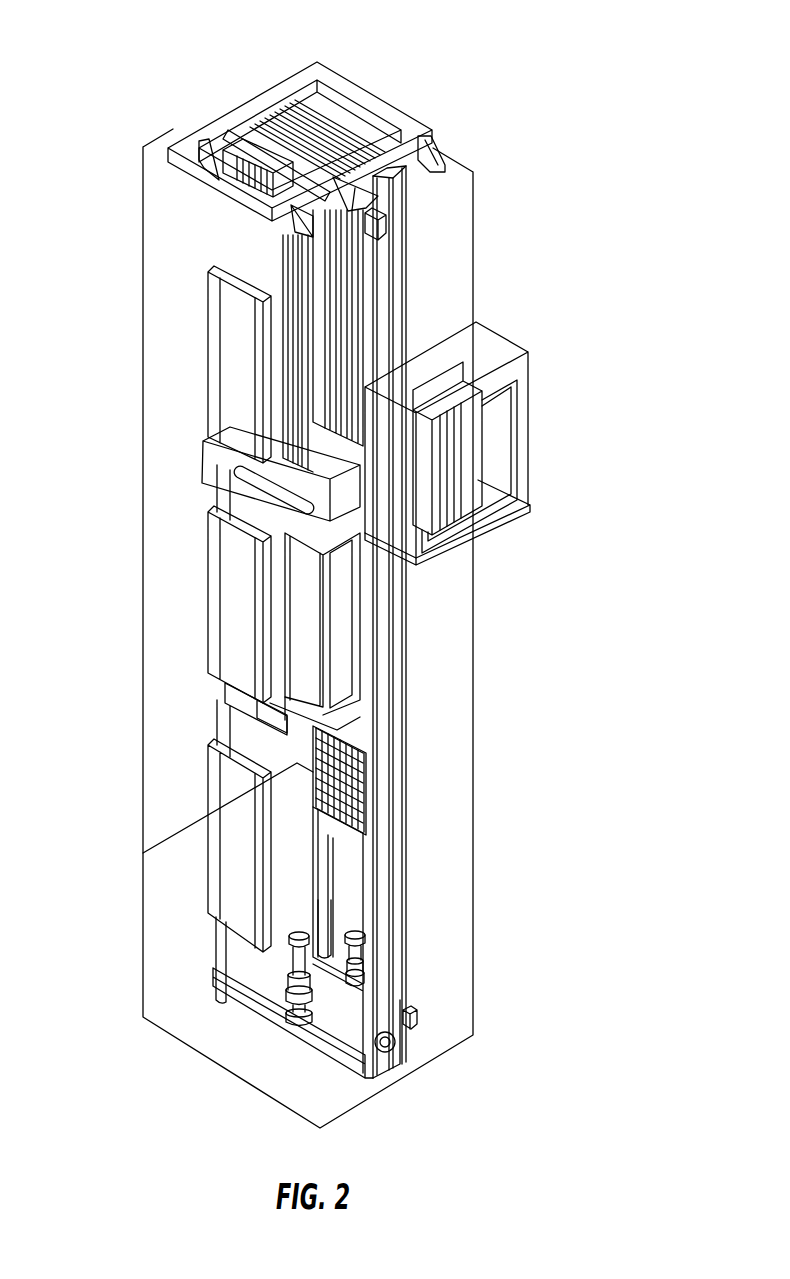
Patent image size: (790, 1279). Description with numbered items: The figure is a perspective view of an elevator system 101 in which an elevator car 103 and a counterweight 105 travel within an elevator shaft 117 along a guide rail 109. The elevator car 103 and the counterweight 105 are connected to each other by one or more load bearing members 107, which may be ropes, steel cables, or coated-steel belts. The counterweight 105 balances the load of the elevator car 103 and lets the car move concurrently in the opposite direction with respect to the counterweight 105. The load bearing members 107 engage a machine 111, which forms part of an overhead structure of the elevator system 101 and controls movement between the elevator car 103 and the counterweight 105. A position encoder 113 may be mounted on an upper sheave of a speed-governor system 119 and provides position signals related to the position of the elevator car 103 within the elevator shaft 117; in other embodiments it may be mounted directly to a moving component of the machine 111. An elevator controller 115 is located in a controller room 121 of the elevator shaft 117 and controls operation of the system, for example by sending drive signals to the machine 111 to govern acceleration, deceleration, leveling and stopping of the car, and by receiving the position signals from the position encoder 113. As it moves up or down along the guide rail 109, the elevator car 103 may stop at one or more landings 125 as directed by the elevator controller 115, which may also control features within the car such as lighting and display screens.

The elevator system 101 is at (533, 97).
The elevator car 103 is at (316, 636).
The counterweight 105 is at (355, 788).
The load bearing members 107 is at (318, 362).
The guide rail 109 is at (385, 718).
The machine 111 is at (236, 152).
The position encoder 113 is at (380, 223).
The elevator controller 115 is at (478, 455).
The elevator shaft 117 is at (185, 718).
The speed-governor system 119 is at (410, 258).
The controller room 121 is at (530, 352).
The landings 125 is at (206, 352).